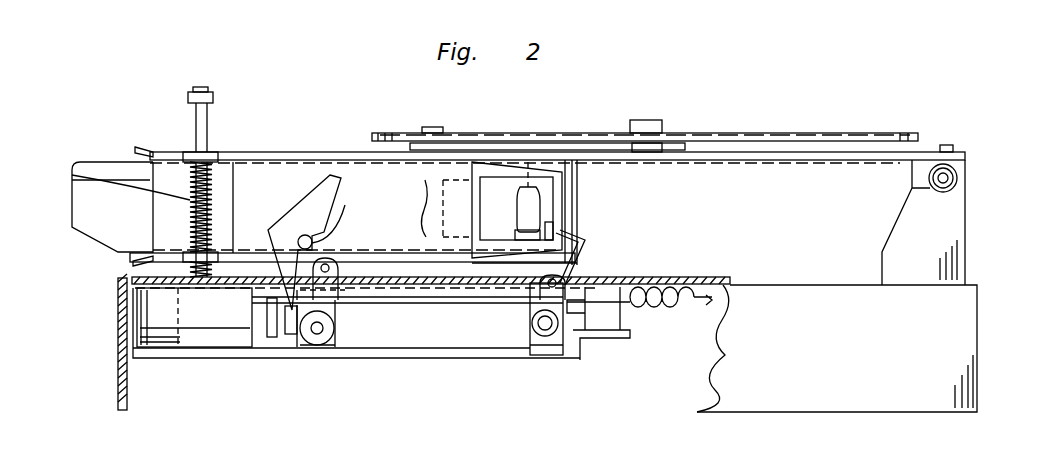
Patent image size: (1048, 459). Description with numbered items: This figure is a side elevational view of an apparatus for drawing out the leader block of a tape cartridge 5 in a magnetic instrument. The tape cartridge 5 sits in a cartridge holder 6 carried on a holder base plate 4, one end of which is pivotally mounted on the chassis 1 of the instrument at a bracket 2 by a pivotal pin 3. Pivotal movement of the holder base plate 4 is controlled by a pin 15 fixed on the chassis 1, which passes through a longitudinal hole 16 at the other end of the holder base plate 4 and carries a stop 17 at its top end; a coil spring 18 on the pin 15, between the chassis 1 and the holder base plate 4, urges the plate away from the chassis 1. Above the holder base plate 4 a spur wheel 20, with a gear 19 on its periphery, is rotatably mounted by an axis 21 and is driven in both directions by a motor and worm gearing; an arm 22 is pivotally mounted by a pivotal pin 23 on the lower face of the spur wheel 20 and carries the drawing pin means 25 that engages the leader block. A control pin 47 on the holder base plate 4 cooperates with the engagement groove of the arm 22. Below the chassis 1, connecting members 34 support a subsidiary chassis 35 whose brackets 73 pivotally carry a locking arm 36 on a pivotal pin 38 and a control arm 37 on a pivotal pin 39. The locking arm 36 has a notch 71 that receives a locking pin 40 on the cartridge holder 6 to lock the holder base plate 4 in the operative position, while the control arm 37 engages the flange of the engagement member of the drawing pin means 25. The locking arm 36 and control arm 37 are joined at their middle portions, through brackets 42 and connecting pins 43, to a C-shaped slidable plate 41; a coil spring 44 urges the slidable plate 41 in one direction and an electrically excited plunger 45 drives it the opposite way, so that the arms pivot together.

The chassis 1 is at (780, 277).
The bracket 2 is at (945, 225).
The pivotal pin 3 is at (950, 178).
The holder base plate 4 is at (760, 160).
The tape cartridge 5 is at (115, 232).
The cartridge holder 6 is at (163, 182).
The pin 15 is at (203, 122).
The longitudinal hole 16 is at (208, 152).
The stop 17 is at (213, 93).
The coil spring 18 is at (72, 176).
The gear 19 is at (372, 136).
The spur wheel 20 is at (772, 135).
The axis 21 is at (648, 121).
The arm 22 is at (518, 150).
The pivotal pin 23 is at (442, 128).
The drawing pin means 25 is at (535, 205).
The connecting member 34 is at (160, 310).
The subsidiary chassis 35 is at (420, 355).
The locking arm 36 is at (343, 308).
The control arm 37 is at (578, 237).
The pivotal pin 38 is at (313, 333).
The pivotal pin 39 is at (547, 328).
The locking pin 40 is at (332, 218).
The slidable plate 41 is at (472, 300).
The bracket 42 is at (327, 290).
The connecting pin 43 is at (333, 267).
The coil spring 44 is at (670, 300).
The plunger 45 is at (220, 340).
The control pin 47 is at (955, 145).
The notch 71 is at (337, 232).
The bracket 73 is at (330, 340).